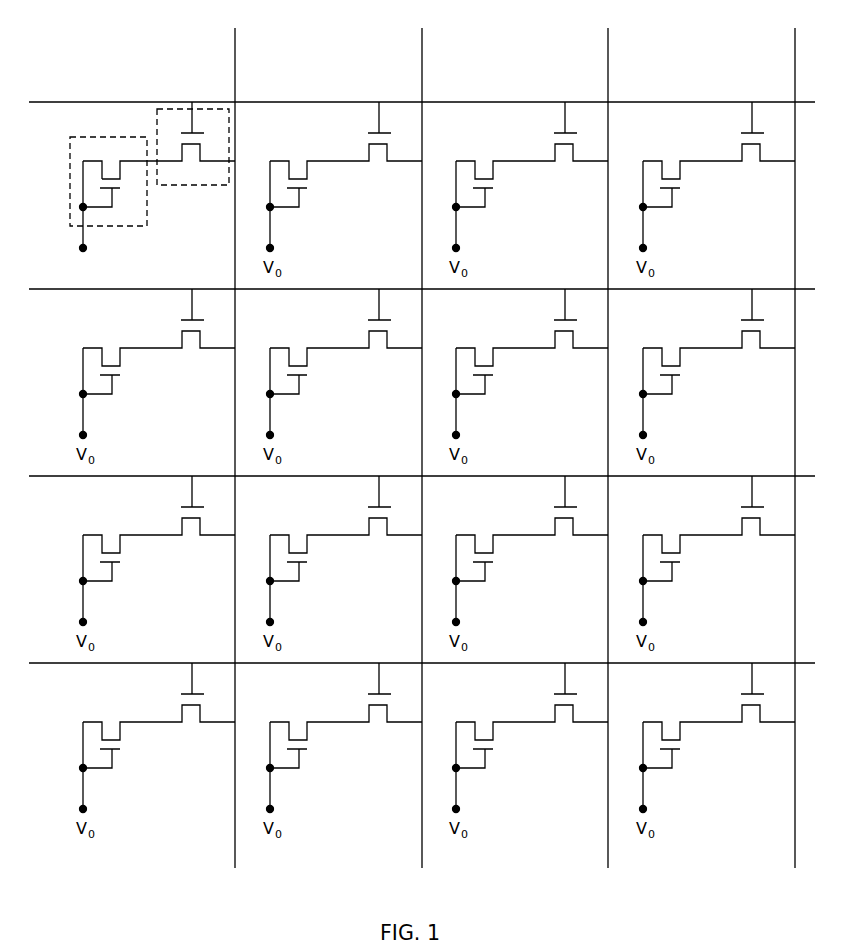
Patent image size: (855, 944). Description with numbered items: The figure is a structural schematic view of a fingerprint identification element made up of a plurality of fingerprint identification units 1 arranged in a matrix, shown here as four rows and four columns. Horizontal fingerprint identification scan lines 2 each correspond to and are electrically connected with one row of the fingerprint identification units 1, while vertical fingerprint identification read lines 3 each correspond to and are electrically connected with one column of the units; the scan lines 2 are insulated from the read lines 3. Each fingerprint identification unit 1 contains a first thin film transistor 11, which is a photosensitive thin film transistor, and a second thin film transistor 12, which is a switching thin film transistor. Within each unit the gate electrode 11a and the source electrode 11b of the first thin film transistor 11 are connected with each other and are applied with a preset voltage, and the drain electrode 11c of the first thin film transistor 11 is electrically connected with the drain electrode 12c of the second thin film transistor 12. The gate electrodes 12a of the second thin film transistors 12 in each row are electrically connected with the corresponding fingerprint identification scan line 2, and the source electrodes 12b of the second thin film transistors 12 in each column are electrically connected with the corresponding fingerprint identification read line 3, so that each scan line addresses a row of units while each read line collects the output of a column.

The fingerprint identification unit 1 is at (143, 58).
The fingerprint identification scan line 2 is at (273, 102).
The fingerprint identification read line 3 is at (235, 53).
The first thin film transistor 11 is at (97, 137).
The gate electrode of the first thin film transistor 11a is at (112, 198).
The source electrode of the first thin film transistor 11b is at (88, 162).
The drain electrode of the first thin film transistor 11c is at (125, 162).
The second thin film transistor 12 is at (172, 109).
The gate electrode of the second thin film transistor 12a is at (200, 117).
The source electrode of the second thin film transistor 12b is at (213, 162).
The drain electrode of the second thin film transistor 12c is at (169, 162).